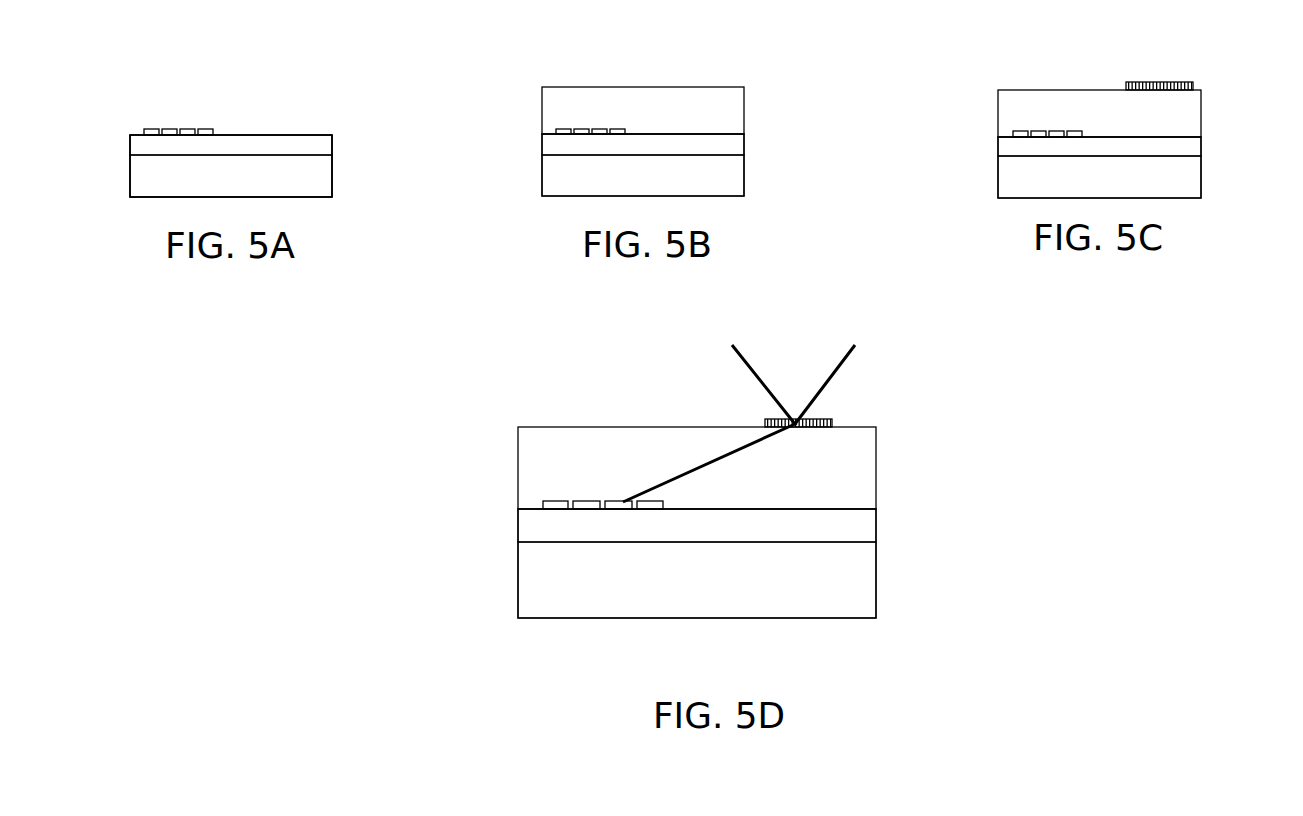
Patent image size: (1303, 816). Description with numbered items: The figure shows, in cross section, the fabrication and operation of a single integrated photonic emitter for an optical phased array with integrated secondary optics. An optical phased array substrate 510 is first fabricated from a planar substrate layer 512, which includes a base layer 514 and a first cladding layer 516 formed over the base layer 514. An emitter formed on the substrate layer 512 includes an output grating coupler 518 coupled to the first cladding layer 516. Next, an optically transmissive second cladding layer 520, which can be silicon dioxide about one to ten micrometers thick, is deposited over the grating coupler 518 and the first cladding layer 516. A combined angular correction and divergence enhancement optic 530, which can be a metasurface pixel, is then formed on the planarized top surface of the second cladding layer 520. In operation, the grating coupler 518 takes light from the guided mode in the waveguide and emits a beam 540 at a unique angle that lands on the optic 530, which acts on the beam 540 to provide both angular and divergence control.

In FIG. 5A, the optical phased array substrate 510 is at (298, 100).
In FIG. 5A, the planar substrate layer 512 is at (339, 135).
In FIG. 5B, the planar substrate layer 512 is at (749, 134).
In FIG. 5C, the planar substrate layer 512 is at (1211, 137).
In FIG. 5D, the planar substrate layer 512 is at (886, 509).
In FIG. 5A, the base layer 514 is at (140, 180).
In FIG. 5B, the base layer 514 is at (548, 185).
In FIG. 5C, the base layer 514 is at (1008, 185).
In FIG. 5D, the base layer 514 is at (528, 588).
In FIG. 5A, the first cladding layer 516 is at (140, 150).
In FIG. 5B, the first cladding layer 516 is at (548, 146).
In FIG. 5C, the first cladding layer 516 is at (1008, 146).
In FIG. 5D, the first cladding layer 516 is at (528, 530).
In FIG. 5A, the output grating coupler 518 is at (187, 128).
In FIG. 5B, the output grating coupler 518 is at (583, 128).
In FIG. 5C, the output grating coupler 518 is at (1046, 130).
In FIG. 5D, the output grating coupler 518 is at (572, 501).
In FIG. 5B, the second cladding layer 520 is at (733, 106).
In FIG. 5C, the second cladding layer 520 is at (1195, 113).
In FIG. 5D, the second cladding layer 520 is at (862, 457).
In FIG. 5C, the combined angular correction and divergence enhancement optic 530 is at (1160, 80).
In FIG. 5D, the combined angular correction and divergence enhancement optic 530 is at (830, 420).
In FIG. 5D, the beam 540 is at (683, 473).